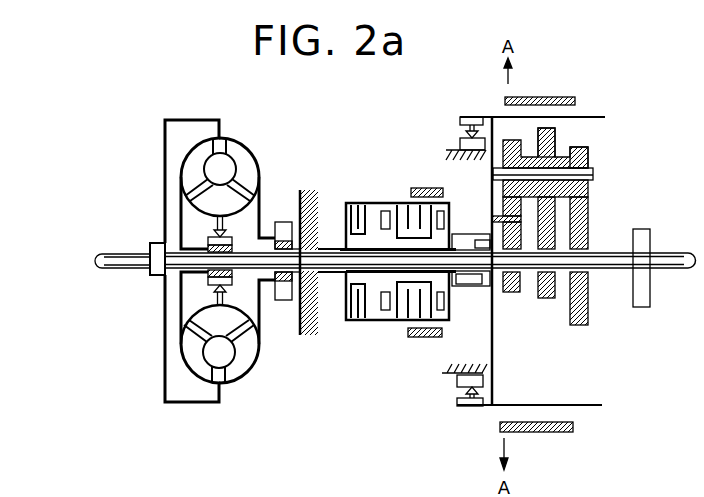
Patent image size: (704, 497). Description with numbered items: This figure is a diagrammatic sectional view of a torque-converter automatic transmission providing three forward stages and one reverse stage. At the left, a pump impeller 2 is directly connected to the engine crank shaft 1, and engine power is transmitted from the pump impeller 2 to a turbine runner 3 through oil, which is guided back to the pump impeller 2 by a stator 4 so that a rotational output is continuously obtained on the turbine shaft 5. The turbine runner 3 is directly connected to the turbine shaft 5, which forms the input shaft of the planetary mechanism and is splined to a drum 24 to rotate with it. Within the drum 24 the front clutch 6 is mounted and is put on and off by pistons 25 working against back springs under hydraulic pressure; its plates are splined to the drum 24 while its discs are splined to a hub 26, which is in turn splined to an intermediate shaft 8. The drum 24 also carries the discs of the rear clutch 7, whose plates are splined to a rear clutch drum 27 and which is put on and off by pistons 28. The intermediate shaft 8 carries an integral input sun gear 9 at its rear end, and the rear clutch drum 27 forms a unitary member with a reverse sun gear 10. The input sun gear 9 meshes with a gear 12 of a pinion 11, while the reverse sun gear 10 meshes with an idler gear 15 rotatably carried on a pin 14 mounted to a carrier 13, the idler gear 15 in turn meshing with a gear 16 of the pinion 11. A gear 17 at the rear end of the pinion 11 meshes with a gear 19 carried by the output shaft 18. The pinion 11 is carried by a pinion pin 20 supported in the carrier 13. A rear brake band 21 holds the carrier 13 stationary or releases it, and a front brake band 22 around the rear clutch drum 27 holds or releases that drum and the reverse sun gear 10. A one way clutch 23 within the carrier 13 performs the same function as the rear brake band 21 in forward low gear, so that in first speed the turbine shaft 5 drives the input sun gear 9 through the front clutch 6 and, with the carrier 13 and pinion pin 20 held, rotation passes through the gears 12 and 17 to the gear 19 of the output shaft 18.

The engine crank shaft 1 is at (118, 271).
The pump impeller 2 is at (245, 158).
The turbine runner 3 is at (198, 162).
The stator 4 is at (205, 206).
The turbine shaft 5 is at (327, 251).
The front clutch 6 is at (360, 321).
The rear clutch 7 is at (405, 321).
The intermediate shaft 8 is at (477, 262).
The input sun gear 9 is at (547, 299).
The reverse sun gear 10 is at (507, 293).
The pinion 11 is at (556, 133).
The gear of pinion 12 is at (544, 117).
The carrier 13 is at (491, 188).
The pin 14 is at (502, 212).
The idler gear 15 is at (502, 232).
The gear of pinion 16 is at (511, 141).
The gear of pinion 17 is at (589, 158).
The output shaft 18 is at (674, 254).
The gear of output shaft 19 is at (589, 238).
The pinion pin 20 is at (596, 177).
The rear brake band 21 is at (549, 96).
The front brake band 22 is at (420, 187).
The one way clutch 23 is at (457, 146).
The drum 24 is at (349, 202).
The pistons 25 is at (384, 203).
The hub 26 is at (354, 281).
The rear clutch drum 27 is at (414, 338).
The pistons 28 is at (438, 306).